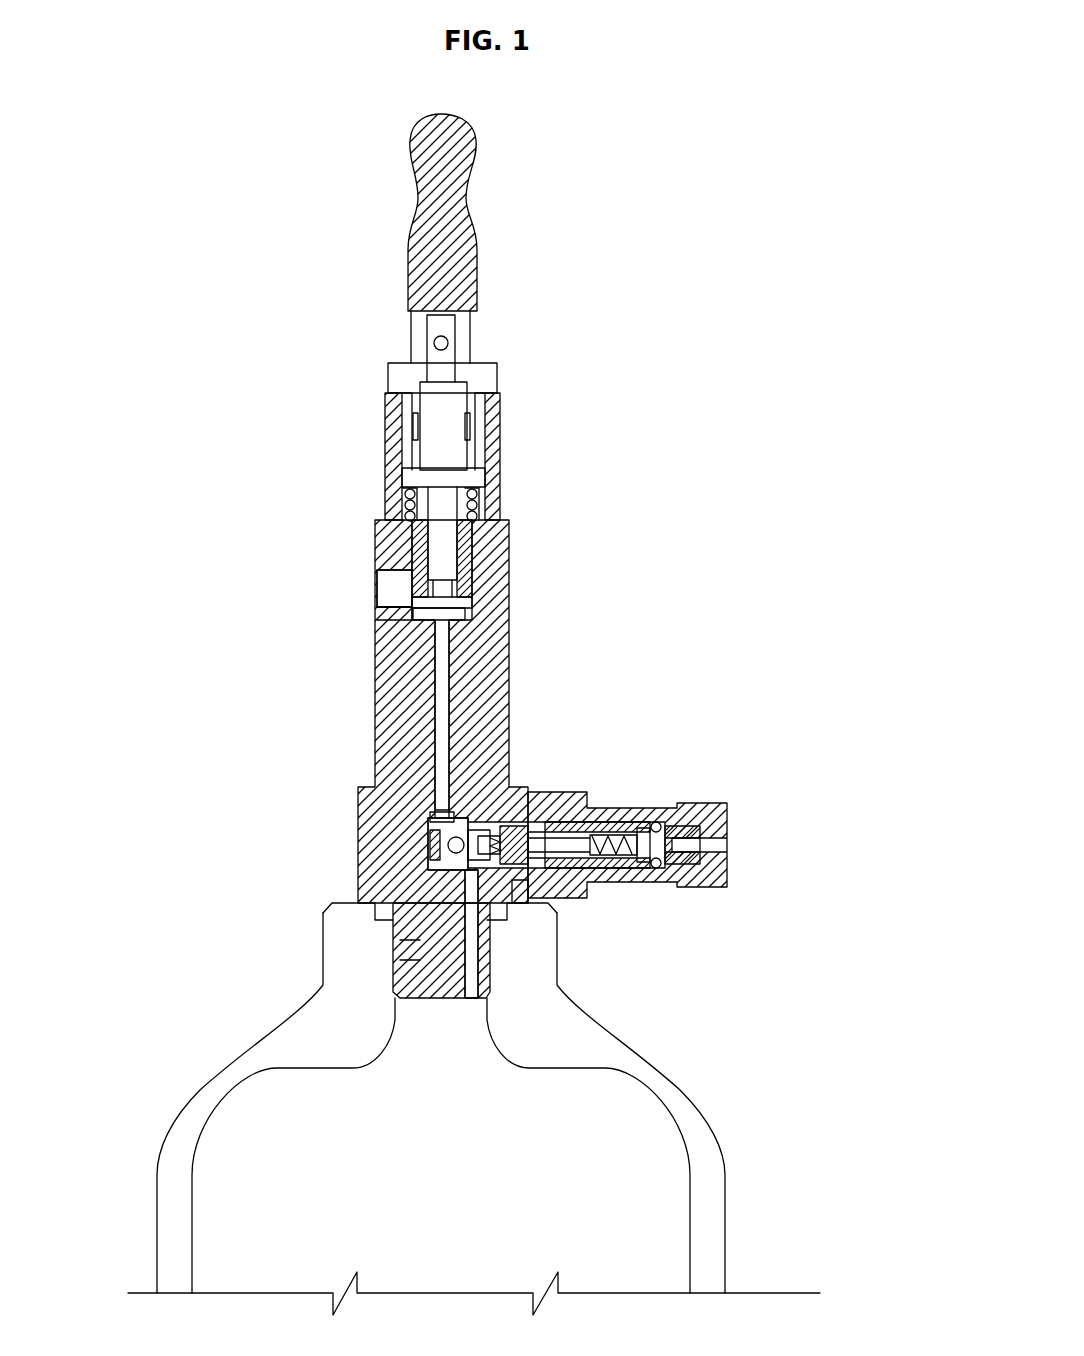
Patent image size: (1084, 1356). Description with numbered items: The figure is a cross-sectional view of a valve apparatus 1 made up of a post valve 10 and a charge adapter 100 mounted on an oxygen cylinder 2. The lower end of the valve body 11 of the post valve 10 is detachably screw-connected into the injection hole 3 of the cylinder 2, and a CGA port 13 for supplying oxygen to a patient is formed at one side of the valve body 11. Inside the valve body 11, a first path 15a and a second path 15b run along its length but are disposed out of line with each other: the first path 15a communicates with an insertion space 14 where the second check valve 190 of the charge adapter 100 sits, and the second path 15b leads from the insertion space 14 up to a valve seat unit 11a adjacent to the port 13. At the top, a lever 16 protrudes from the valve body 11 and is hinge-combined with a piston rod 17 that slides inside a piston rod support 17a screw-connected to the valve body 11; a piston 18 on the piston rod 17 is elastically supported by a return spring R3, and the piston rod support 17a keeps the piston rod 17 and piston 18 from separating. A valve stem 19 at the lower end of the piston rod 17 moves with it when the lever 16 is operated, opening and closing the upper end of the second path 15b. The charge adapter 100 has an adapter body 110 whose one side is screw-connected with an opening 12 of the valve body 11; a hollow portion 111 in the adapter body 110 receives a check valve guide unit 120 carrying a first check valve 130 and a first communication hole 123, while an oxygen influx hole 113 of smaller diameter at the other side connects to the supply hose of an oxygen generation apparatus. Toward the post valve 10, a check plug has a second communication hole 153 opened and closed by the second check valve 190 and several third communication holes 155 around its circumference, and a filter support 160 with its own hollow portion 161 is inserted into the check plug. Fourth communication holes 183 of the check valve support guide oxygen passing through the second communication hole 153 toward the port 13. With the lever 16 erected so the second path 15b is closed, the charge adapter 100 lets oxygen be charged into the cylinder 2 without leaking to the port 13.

The valve apparatus 1 is at (177, 162).
The cylinder 2 is at (183, 1130).
The injection hole 3 is at (400, 998).
The post valve 10 is at (352, 468).
The valve body 11 is at (385, 667).
The valve seat unit 11a is at (385, 618).
The opening 12 is at (528, 792).
The CGA-870 port 13 is at (387, 583).
The insertion space 14 is at (432, 818).
The first path 15a is at (437, 977).
The second path 15b is at (440, 703).
The lever 16 is at (468, 262).
The piston rod 17 is at (452, 410).
The piston rod support 17a is at (493, 372).
The piston 18 is at (475, 477).
The valve stem 19 is at (495, 590).
The return spring R3 is at (473, 503).
The charge adapter 100 is at (723, 778).
The adapter body 110 is at (562, 790).
The hollow portion 111 is at (560, 832).
The oxygen influx hole 113 is at (718, 848).
The check valve guide unit 120 is at (630, 882).
The first communication hole 123 is at (683, 880).
The first check valve 130 is at (620, 826).
The second communication hole 153 is at (468, 860).
The third communication holes 155 is at (462, 890).
The filter support 160 is at (507, 727).
The hollow portion 161 is at (538, 905).
The fourth communication holes 183 is at (440, 820).
The second check valve 190 is at (446, 845).